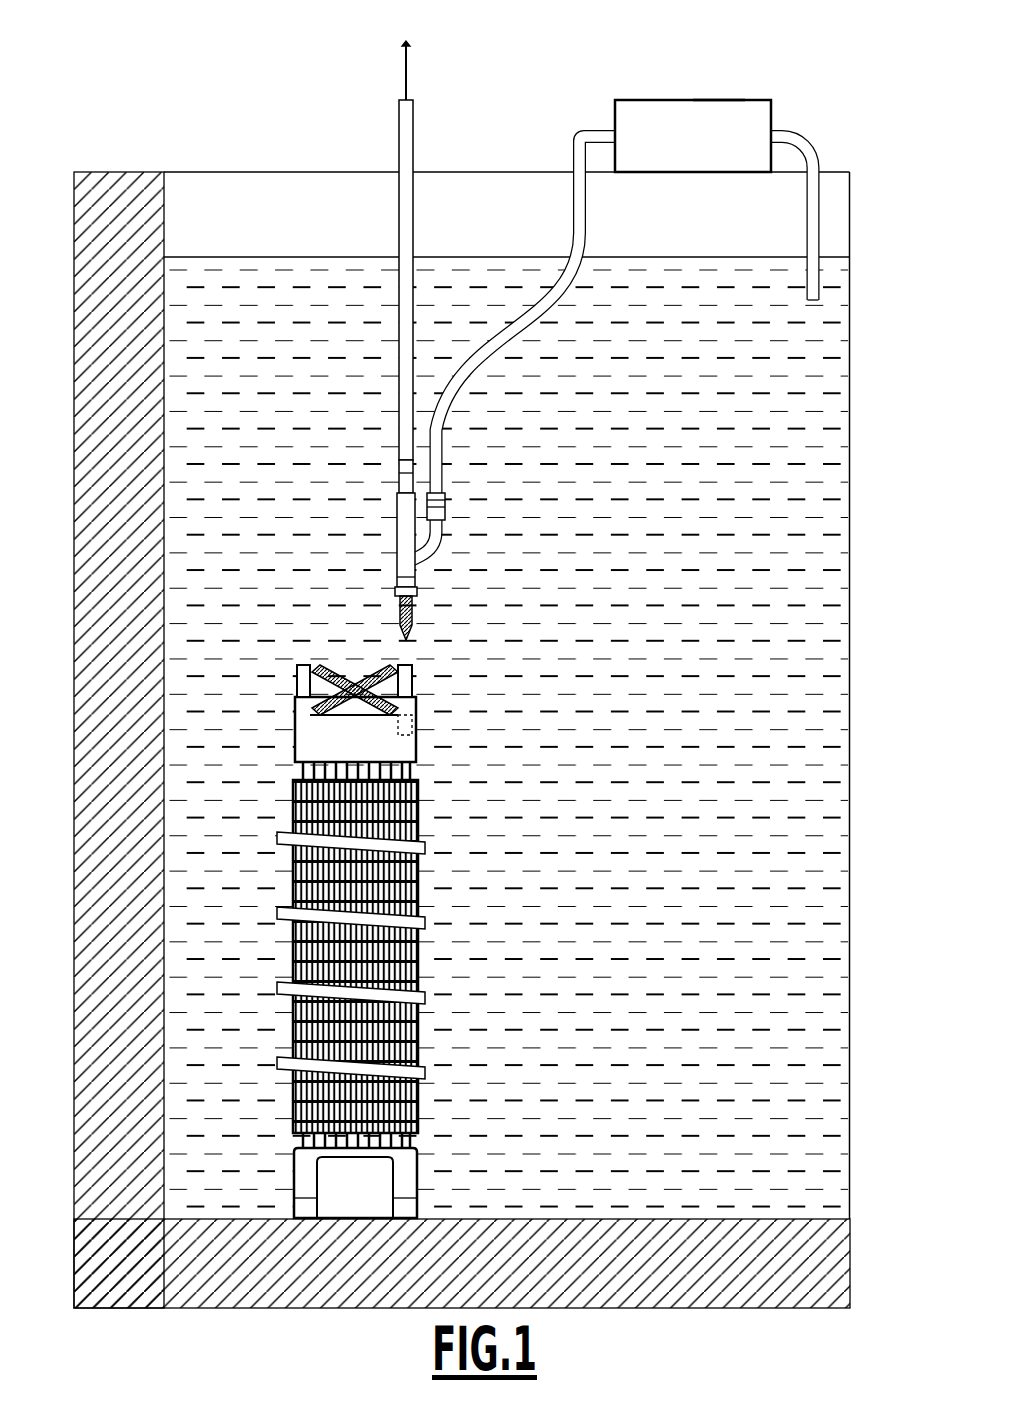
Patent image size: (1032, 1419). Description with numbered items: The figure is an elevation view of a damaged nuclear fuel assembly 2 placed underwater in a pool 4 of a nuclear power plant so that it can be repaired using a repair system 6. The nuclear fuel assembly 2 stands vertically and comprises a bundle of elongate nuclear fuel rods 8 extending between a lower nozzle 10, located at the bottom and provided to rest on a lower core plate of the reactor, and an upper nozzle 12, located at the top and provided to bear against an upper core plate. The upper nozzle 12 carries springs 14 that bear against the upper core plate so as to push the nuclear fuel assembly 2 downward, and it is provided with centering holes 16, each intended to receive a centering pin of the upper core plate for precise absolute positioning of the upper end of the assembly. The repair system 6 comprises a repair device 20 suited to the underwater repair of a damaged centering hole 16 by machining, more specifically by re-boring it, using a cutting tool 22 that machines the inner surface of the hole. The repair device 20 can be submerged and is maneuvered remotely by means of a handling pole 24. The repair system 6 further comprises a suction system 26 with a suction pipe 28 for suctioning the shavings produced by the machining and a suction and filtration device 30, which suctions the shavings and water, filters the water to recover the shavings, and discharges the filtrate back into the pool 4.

The damaged nuclear fuel assembly 2 is at (454, 919).
The pool 4 is at (834, 152).
The repair system 6 is at (556, 320).
The nuclear fuel rods 8 is at (420, 836).
The lower nozzle 10 is at (417, 1180).
The upper nozzle 12 is at (417, 742).
The springs 14 is at (305, 675).
The centering holes 16 is at (405, 705).
The repair device 20 is at (392, 528).
The cutting tool 22 is at (396, 612).
The handling pole 24 is at (399, 148).
The suction system 26 is at (630, 95).
The suction pipe 28 is at (530, 300).
The suction and filtration device 30 is at (718, 100).